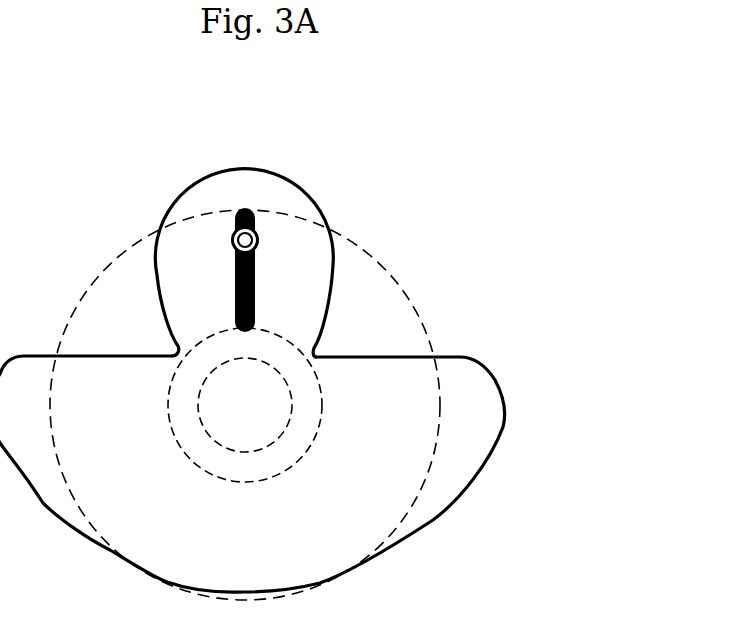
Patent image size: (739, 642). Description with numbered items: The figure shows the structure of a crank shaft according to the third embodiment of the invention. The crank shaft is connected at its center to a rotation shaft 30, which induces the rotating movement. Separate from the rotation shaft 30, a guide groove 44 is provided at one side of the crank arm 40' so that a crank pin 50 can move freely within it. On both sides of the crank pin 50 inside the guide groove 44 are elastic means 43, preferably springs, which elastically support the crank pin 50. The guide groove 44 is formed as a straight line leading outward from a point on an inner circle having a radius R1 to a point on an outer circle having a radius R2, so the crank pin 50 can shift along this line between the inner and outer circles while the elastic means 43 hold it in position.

The rotation shaft 30 is at (207, 380).
The crank arm 40' is at (244, 221).
The elastic means 43 is at (233, 242).
The guide groove 44 is at (257, 268).
The crank pin 50 is at (258, 231).
The radius of inner circle R1 is at (321, 405).
The radius of outer circle R2 is at (245, 405).